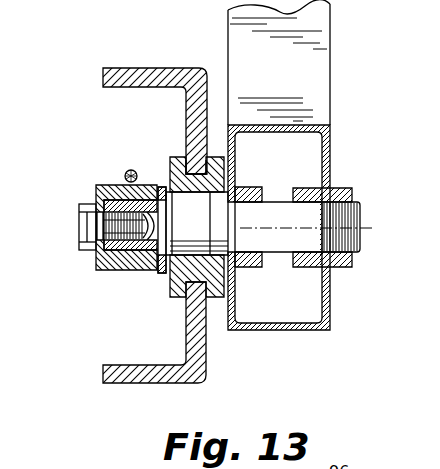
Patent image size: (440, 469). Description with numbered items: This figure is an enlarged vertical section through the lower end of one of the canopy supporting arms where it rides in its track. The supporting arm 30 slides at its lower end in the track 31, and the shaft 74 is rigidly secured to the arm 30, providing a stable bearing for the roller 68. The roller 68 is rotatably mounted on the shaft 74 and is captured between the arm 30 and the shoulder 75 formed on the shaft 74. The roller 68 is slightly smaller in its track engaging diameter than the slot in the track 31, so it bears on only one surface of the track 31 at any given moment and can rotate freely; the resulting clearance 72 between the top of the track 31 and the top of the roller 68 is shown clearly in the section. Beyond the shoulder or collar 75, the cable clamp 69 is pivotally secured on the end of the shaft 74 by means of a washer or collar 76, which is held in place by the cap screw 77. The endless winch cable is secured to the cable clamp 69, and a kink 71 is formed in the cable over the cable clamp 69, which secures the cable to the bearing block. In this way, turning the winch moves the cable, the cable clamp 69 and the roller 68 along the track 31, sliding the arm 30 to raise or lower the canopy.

The supporting arm 30 is at (332, 64).
The track 31 is at (203, 330).
The roller 68 is at (178, 157).
The cable clamp 69 is at (113, 187).
The kink 71 is at (129, 170).
The clearance 72 is at (194, 168).
The shaft 74 is at (362, 230).
The shoulder 75 is at (166, 186).
The washer or collar 76 is at (97, 187).
The cap screw 77 is at (80, 229).